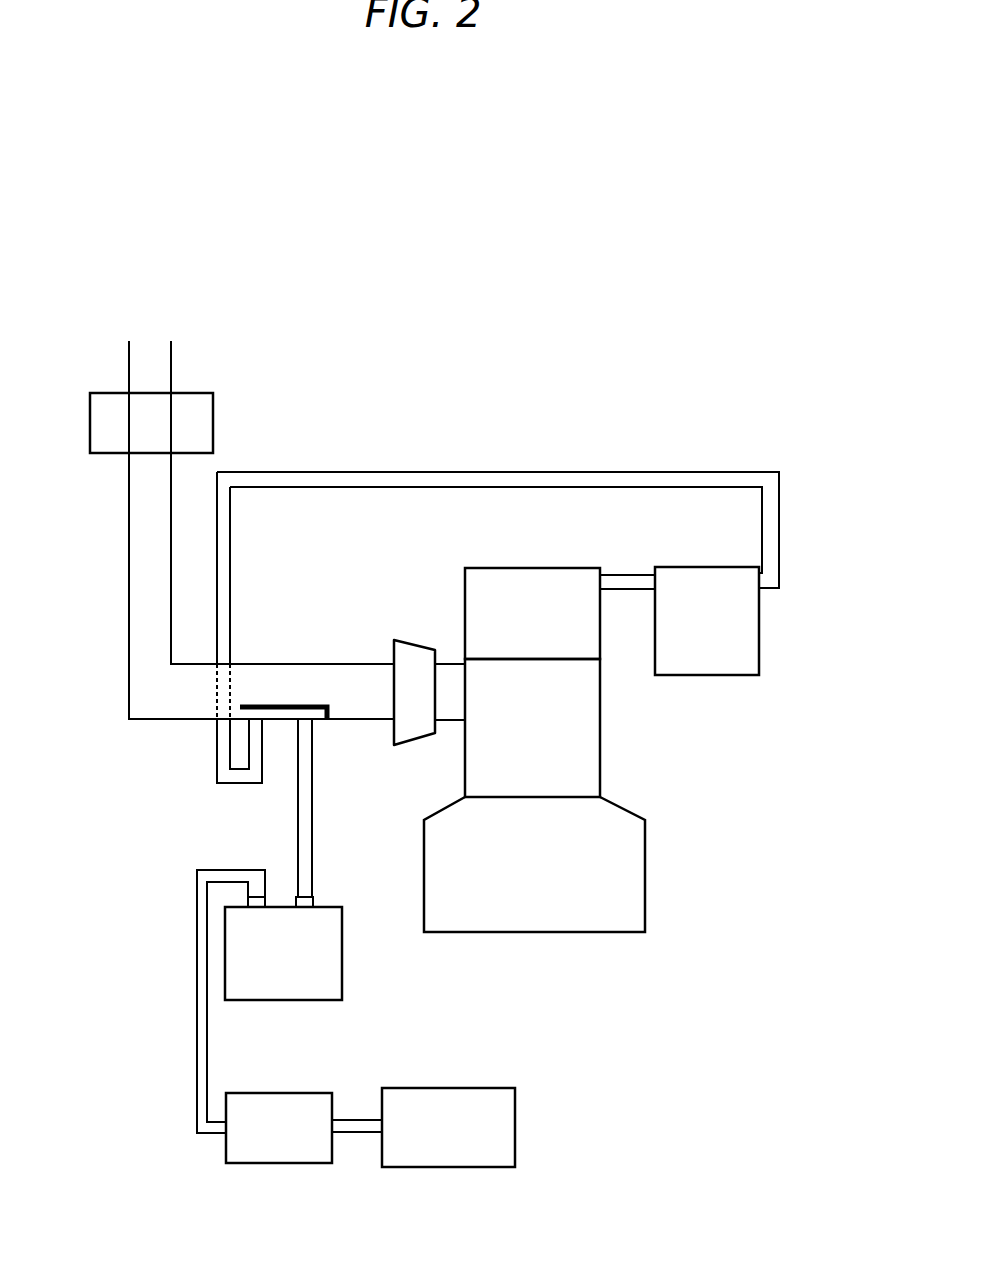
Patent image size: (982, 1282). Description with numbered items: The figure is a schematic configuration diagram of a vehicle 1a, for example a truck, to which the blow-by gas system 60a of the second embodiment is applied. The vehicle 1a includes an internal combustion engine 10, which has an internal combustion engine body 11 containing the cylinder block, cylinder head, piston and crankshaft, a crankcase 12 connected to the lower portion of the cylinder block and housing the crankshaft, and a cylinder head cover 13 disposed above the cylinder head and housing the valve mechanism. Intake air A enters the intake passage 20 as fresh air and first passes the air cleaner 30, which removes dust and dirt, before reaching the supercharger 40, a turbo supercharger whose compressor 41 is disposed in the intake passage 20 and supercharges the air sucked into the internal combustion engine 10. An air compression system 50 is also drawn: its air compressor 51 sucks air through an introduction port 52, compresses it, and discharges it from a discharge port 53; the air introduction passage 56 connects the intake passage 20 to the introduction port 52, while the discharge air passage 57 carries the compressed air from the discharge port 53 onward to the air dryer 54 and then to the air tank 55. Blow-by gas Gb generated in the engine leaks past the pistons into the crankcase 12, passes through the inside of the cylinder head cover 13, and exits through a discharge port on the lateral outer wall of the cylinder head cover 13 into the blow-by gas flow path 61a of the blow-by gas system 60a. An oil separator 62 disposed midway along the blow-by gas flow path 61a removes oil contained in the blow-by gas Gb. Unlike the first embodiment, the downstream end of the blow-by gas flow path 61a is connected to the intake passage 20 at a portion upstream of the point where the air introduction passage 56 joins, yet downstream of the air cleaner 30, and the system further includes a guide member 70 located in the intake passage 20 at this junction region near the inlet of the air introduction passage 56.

The vehicle 1a is at (105, 209).
The internal combustion engine 10 is at (573, 761).
The internal combustion engine body 11 is at (600, 735).
The crankcase 12 is at (645, 877).
The cylinder head cover 13 is at (505, 578).
The intake passage 20 is at (171, 365).
The air cleaner 30 is at (213, 425).
The supercharger 40 is at (388, 660).
The compressor 41 is at (412, 648).
The air compression system 50 is at (178, 830).
The air compressor 51 is at (342, 950).
The introduction port 52 is at (314, 902).
The discharge port 53 is at (265, 896).
The air dryer 54 is at (262, 1093).
The air tank 55 is at (420, 1088).
The air introduction passage 56 is at (312, 805).
The discharge air passage 57 is at (197, 930).
The blow-by gas system 60a is at (746, 373).
The blow-by gas flow path 61a is at (658, 476).
The oil separator 62 is at (760, 658).
The guide member 70 is at (302, 696).
The intake air A is at (148, 350).
The blow-by gas Gb is at (525, 480).